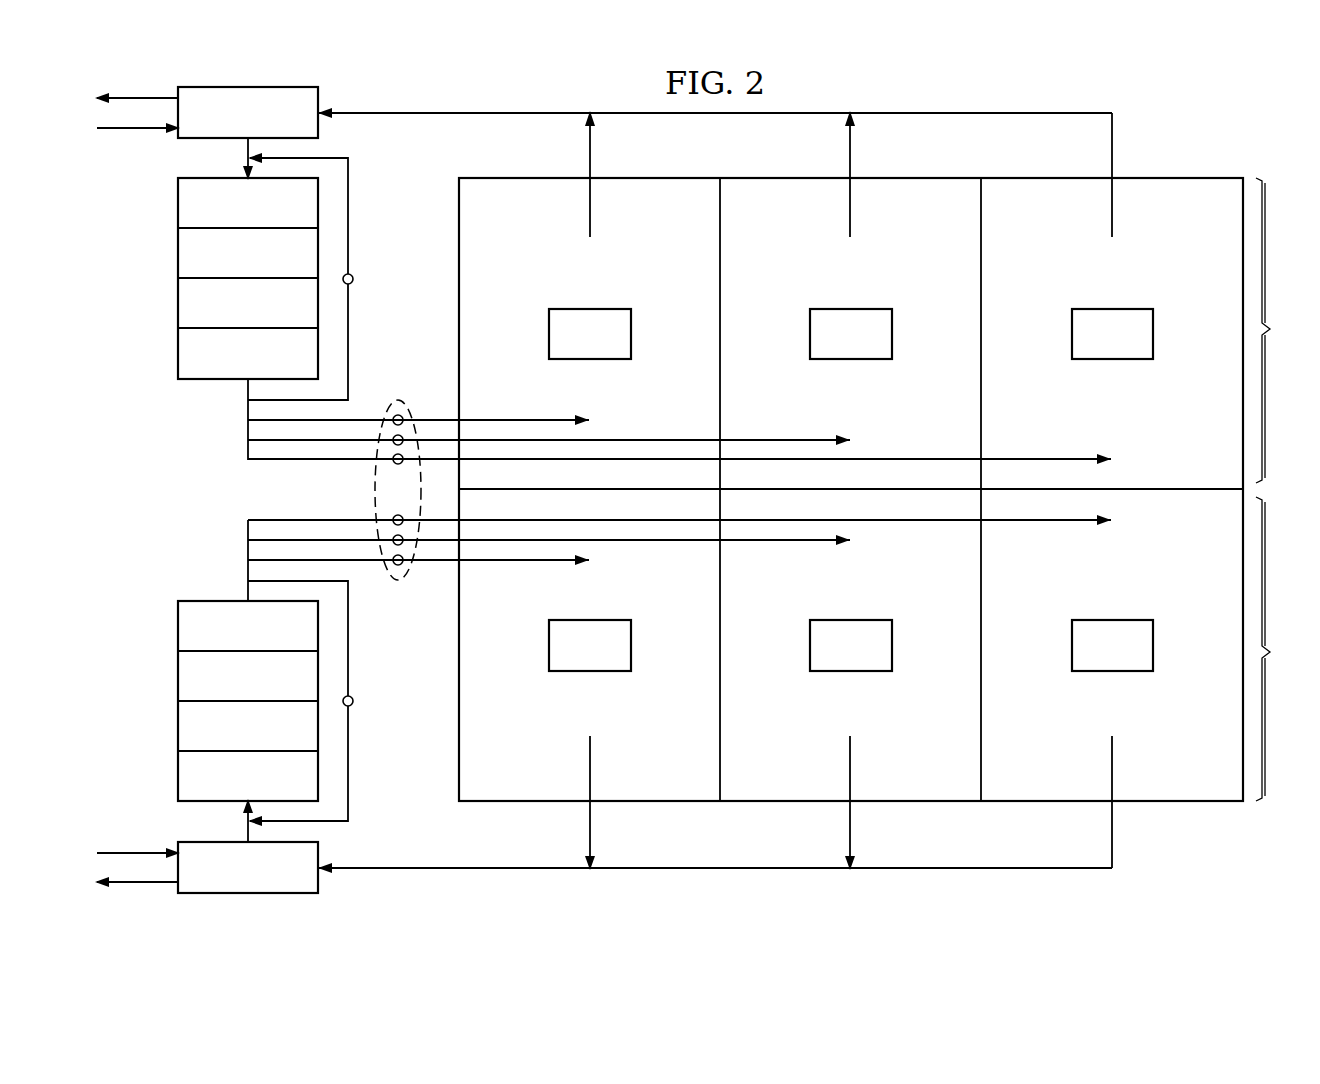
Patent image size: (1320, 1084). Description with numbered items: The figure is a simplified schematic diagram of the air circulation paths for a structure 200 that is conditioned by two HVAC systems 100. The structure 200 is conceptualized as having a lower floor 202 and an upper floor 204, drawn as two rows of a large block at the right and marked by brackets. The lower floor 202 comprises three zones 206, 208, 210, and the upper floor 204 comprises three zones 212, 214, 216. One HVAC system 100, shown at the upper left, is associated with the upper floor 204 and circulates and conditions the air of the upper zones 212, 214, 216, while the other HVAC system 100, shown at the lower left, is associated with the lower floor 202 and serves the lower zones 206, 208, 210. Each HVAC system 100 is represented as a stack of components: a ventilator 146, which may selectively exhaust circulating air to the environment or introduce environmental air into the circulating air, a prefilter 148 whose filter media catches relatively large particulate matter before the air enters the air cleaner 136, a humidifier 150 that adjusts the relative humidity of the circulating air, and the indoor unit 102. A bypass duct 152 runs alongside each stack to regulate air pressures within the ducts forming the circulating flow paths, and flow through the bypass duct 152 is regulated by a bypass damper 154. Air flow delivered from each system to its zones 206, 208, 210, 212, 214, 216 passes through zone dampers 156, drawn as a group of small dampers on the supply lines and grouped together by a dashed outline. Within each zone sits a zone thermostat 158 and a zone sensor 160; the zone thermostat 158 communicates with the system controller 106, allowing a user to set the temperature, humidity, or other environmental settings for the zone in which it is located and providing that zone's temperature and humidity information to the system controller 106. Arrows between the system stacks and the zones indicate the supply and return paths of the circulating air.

The HVAC system 100 is at (176, 413).
The indoor unit 102 is at (182, 303).
The system controller 106 is at (590, 309).
The air cleaner 136 is at (182, 727).
The ventilator 146 is at (320, 138).
The prefilter 148 is at (182, 203).
The humidifier 150 is at (182, 353).
The bypass duct 152 is at (348, 221).
The bypass damper 154 is at (353, 279).
The zone dampers 156 is at (182, 253).
The zone thermostat 158 is at (850, 309).
The zone sensor 160 is at (1112, 309).
The structure 200 is at (1216, 810).
The lower floor 202 is at (1286, 649).
The upper floor 204 is at (1286, 330).
The zone 206 is at (548, 795).
The zone 208 is at (892, 795).
The zone 210 is at (1154, 795).
The zone 212 is at (548, 184).
The zone 214 is at (891, 184).
The zone 216 is at (1053, 184).